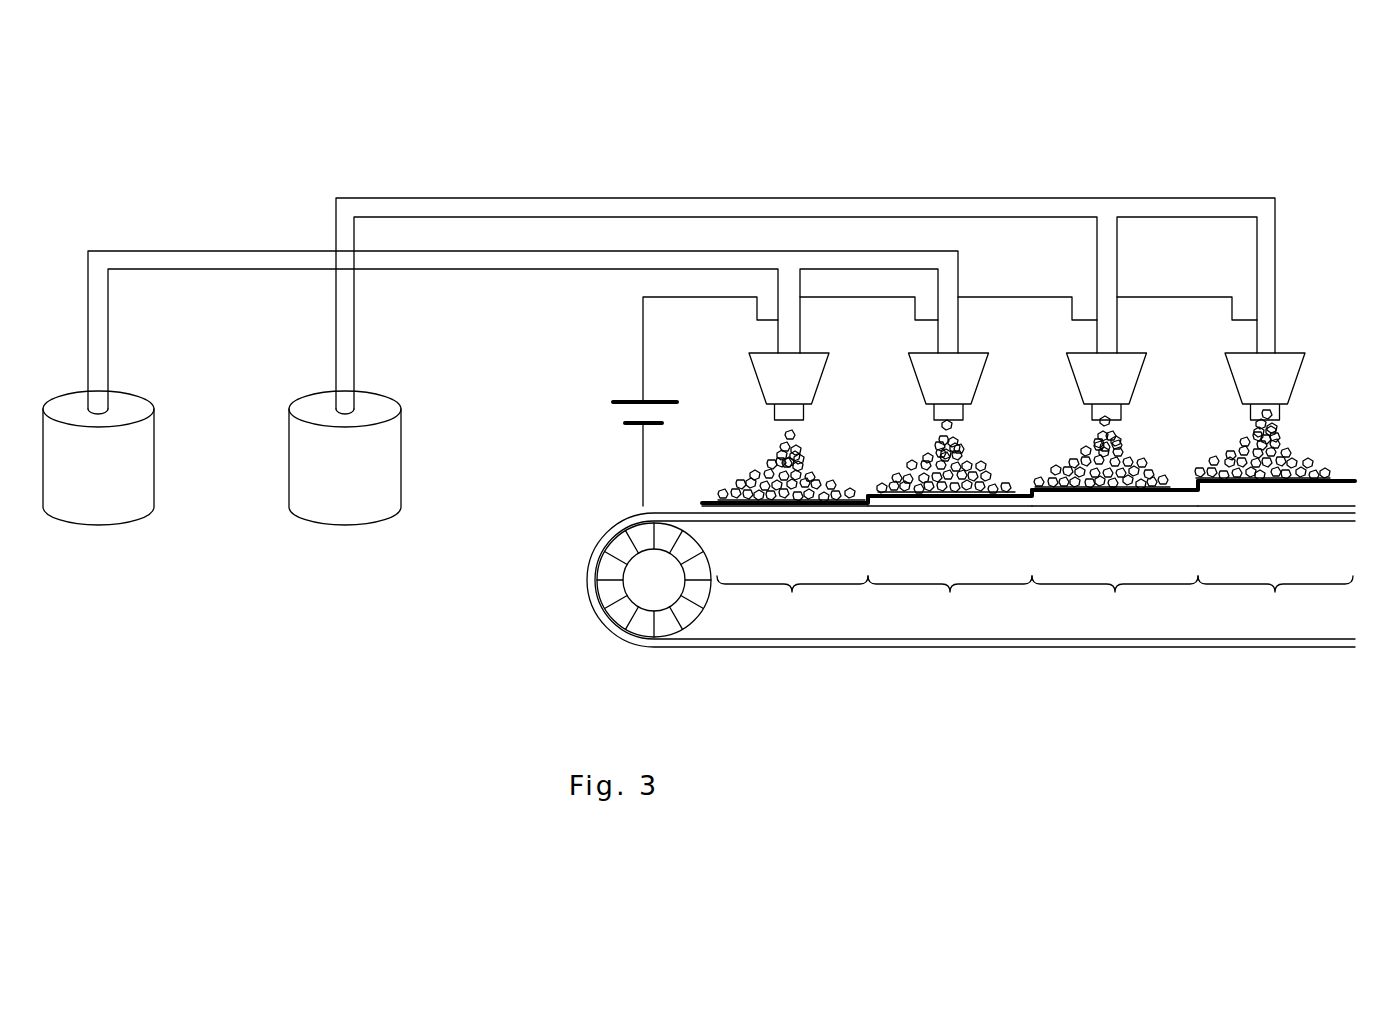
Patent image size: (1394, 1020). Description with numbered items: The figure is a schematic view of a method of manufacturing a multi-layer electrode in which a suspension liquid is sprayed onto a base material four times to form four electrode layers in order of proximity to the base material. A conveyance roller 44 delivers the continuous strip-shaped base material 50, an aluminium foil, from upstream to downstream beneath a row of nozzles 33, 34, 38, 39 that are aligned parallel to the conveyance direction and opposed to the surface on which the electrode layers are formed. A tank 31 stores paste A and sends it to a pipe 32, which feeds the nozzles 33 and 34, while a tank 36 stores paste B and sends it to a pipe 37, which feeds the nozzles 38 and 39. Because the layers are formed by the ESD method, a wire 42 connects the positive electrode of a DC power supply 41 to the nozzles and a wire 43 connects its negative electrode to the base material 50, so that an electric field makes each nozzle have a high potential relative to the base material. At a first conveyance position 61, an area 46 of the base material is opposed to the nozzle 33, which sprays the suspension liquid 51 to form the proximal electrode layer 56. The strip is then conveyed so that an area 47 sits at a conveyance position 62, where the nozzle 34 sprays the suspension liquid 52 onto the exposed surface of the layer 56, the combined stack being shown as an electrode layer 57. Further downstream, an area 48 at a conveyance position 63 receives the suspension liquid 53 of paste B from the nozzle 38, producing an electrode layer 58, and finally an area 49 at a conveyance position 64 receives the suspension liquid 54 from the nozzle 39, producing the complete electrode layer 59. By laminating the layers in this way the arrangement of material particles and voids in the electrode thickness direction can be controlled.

The tank 31 is at (95, 525).
The tank 36 is at (343, 525).
The pipe 32 is at (177, 251).
The pipe 37 is at (432, 197).
The nozzle 33 is at (756, 378).
The nozzle 34 is at (916, 378).
The nozzle 38 is at (1076, 378).
The nozzle 39 is at (1235, 378).
The DC power supply 41 is at (613, 412).
The wire 42 is at (643, 333).
The wire 43 is at (643, 466).
The conveyance roller 44 is at (648, 598).
The base material 50 is at (862, 650).
The area 46 is at (793, 516).
The area 47 is at (950, 516).
The area 48 is at (1105, 516).
The area 49 is at (1268, 516).
The suspension liquid 51 is at (762, 446).
The suspension liquid 52 is at (922, 446).
The suspension liquid 53 is at (1084, 444).
The suspension liquid 54 is at (1242, 444).
The electrode layer 56 is at (775, 508).
The electrode layer 57 is at (933, 508).
The electrode layer 58 is at (1090, 498).
The electrode layer 59 is at (1252, 487).
The conveyance position 61 is at (792, 602).
The conveyance position 62 is at (950, 602).
The conveyance position 63 is at (1115, 602).
The conveyance position 64 is at (1275, 602).